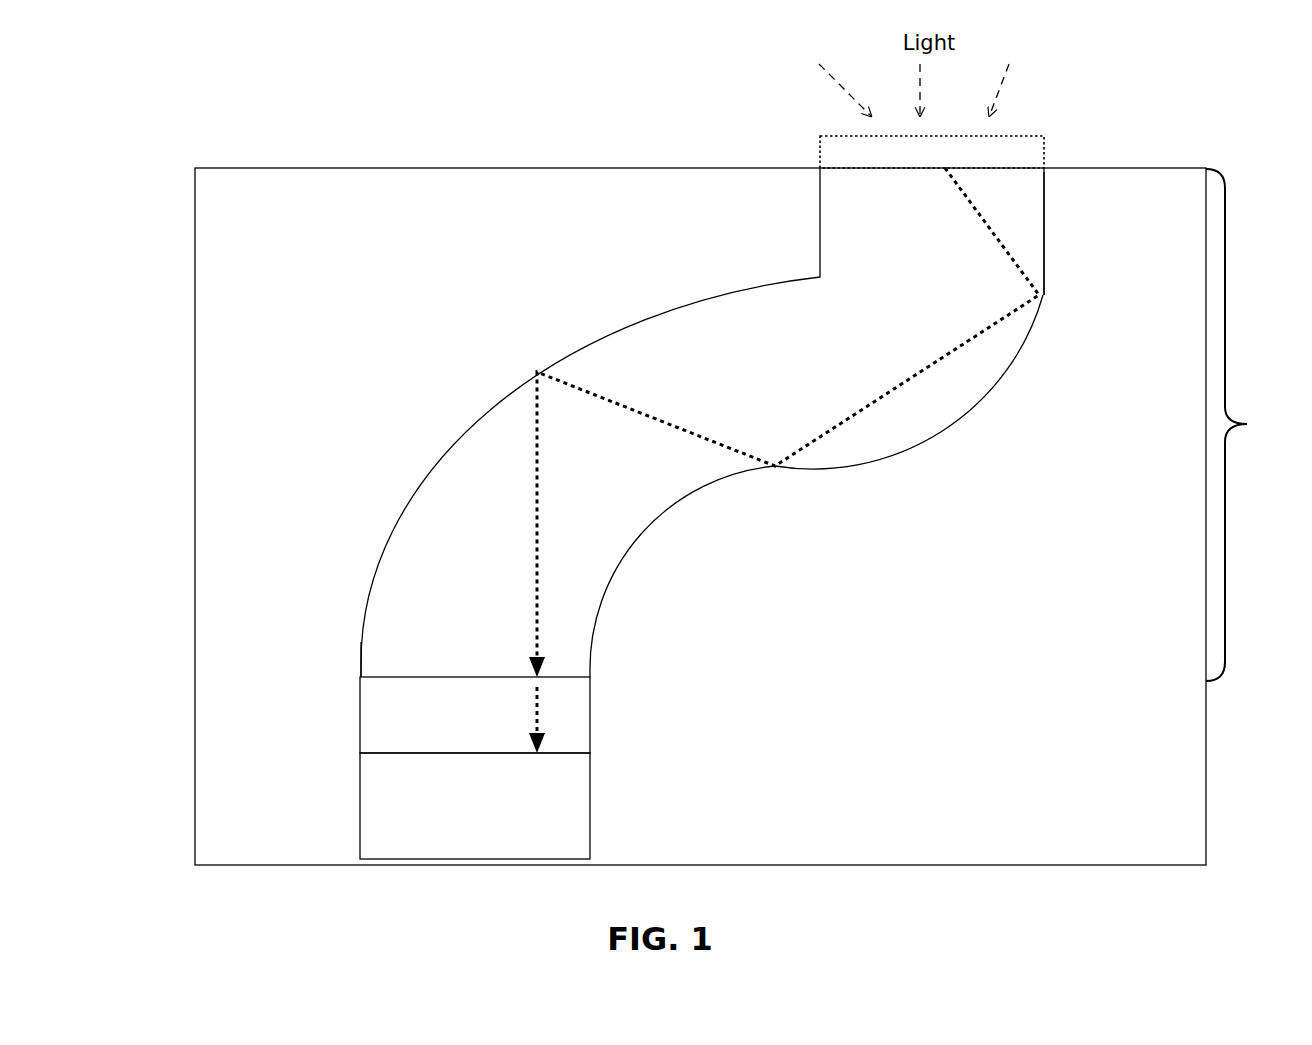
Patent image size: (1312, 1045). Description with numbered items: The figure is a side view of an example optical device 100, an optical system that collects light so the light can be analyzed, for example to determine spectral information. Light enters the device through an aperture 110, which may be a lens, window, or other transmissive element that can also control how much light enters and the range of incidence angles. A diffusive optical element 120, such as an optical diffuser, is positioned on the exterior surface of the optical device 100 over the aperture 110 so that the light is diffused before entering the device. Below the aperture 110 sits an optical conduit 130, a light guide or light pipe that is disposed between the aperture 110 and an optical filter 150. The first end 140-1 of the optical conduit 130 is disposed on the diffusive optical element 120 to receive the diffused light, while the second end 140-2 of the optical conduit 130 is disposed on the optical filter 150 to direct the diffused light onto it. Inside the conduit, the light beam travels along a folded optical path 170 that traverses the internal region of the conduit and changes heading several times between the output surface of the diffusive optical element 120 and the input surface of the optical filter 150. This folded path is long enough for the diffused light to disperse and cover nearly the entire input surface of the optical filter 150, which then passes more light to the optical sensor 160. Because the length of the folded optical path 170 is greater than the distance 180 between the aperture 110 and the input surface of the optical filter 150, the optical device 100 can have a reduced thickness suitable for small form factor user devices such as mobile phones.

The optical device 100 is at (216, 149).
The aperture 110 is at (813, 170).
The diffusive optical element 120 is at (911, 162).
The optical conduit 130 is at (911, 232).
The first end of the optical conduit 140-1 is at (1000, 176).
The second end of the optical conduit 140-2 is at (381, 657).
The optical filter 150 is at (454, 725).
The optical sensor 160 is at (454, 817).
The folded optical path 170 is at (531, 414).
The distance 180 is at (1253, 425).